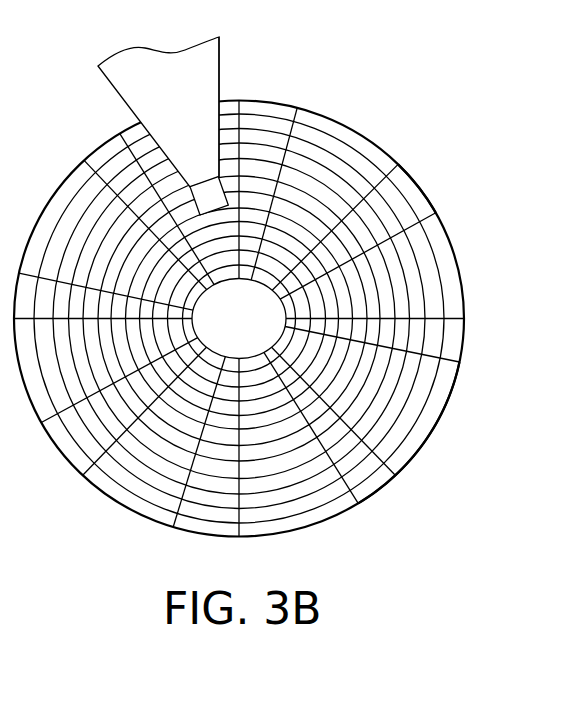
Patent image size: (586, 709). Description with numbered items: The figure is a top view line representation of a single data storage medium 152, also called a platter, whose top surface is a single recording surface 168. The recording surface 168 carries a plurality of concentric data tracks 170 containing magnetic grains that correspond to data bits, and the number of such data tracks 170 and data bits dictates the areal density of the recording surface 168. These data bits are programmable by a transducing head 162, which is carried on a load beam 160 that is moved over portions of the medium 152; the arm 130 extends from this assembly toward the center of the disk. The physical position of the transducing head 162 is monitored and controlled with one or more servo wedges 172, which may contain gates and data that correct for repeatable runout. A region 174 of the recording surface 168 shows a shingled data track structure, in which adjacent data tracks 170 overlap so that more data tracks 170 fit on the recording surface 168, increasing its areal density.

The actuator arm 130 is at (222, 75).
The data storage medium 152 is at (246, 284).
The load beam 160 is at (159, 78).
The transducing head 162 is at (207, 178).
The recording surface 168 is at (348, 116).
The data tracks 170 is at (125, 484).
The servo wedges 172 is at (421, 186).
The region 174 is at (438, 422).